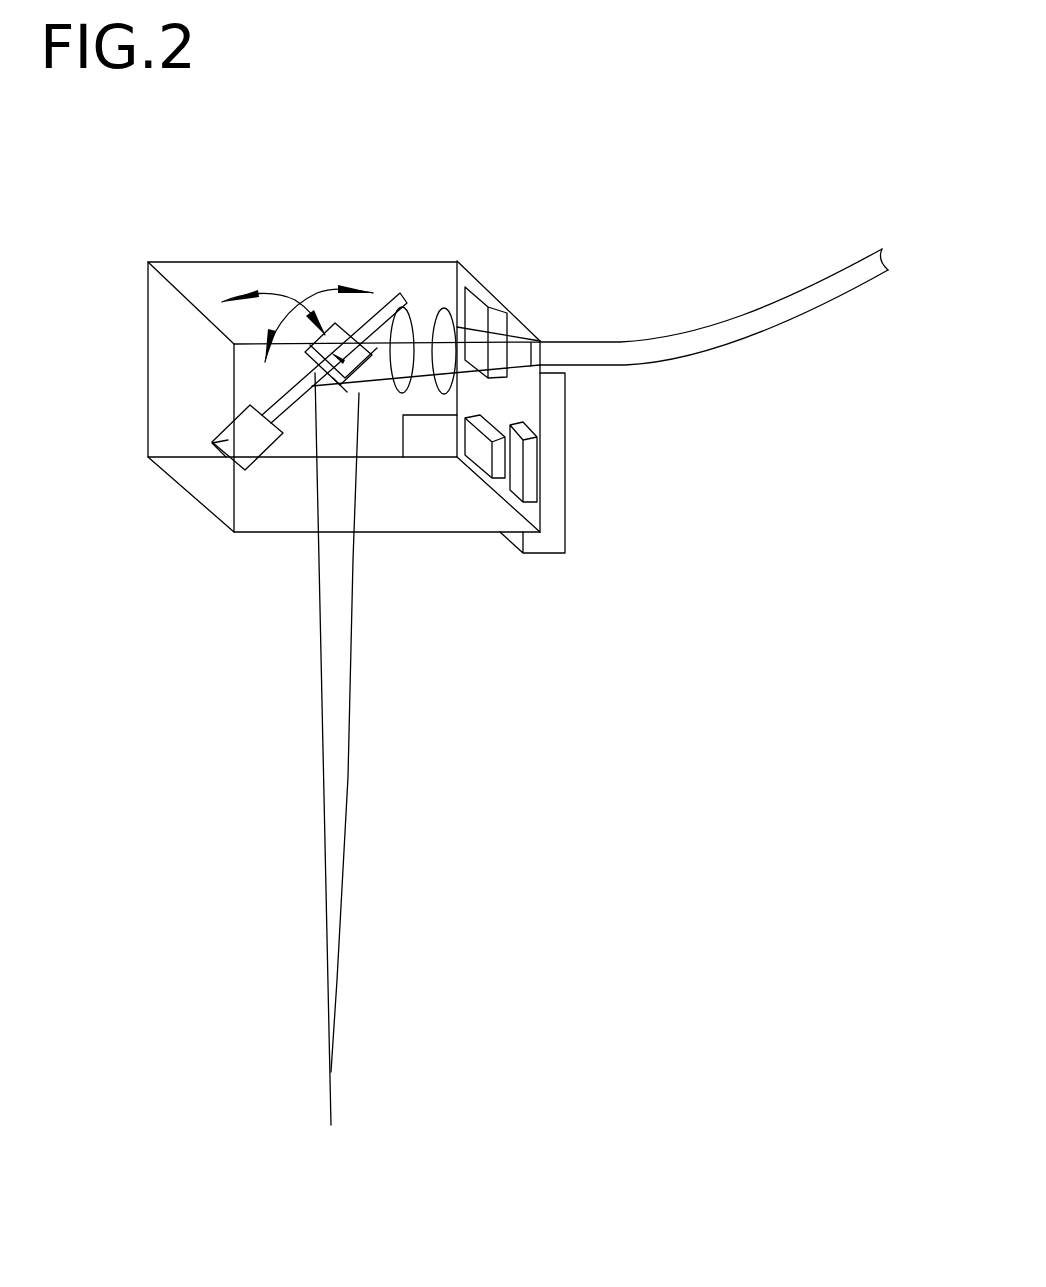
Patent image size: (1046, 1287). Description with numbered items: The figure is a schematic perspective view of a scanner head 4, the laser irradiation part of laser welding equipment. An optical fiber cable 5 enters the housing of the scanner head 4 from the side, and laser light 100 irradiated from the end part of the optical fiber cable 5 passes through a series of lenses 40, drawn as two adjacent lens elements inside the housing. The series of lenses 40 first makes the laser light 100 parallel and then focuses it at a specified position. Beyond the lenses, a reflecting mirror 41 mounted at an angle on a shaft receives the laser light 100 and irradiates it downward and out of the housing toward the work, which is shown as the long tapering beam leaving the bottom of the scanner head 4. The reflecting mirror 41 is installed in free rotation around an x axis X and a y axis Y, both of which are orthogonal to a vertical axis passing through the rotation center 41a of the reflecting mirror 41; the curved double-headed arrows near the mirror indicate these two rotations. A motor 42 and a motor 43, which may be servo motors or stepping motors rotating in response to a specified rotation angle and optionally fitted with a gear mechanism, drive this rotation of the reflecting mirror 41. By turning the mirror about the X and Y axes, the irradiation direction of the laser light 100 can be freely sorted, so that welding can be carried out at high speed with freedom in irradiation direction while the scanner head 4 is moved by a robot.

The scanner head 4 is at (152, 295).
The series of lenses 40 is at (447, 197).
The reflecting mirror 41 is at (275, 409).
The rotation center 41a is at (357, 387).
The motor 42 is at (310, 352).
The motor 43 is at (228, 440).
The optical fiber cable 5 is at (786, 303).
The laser light 100 is at (350, 777).
The x axis X is at (318, 291).
The y axis Y is at (272, 293).